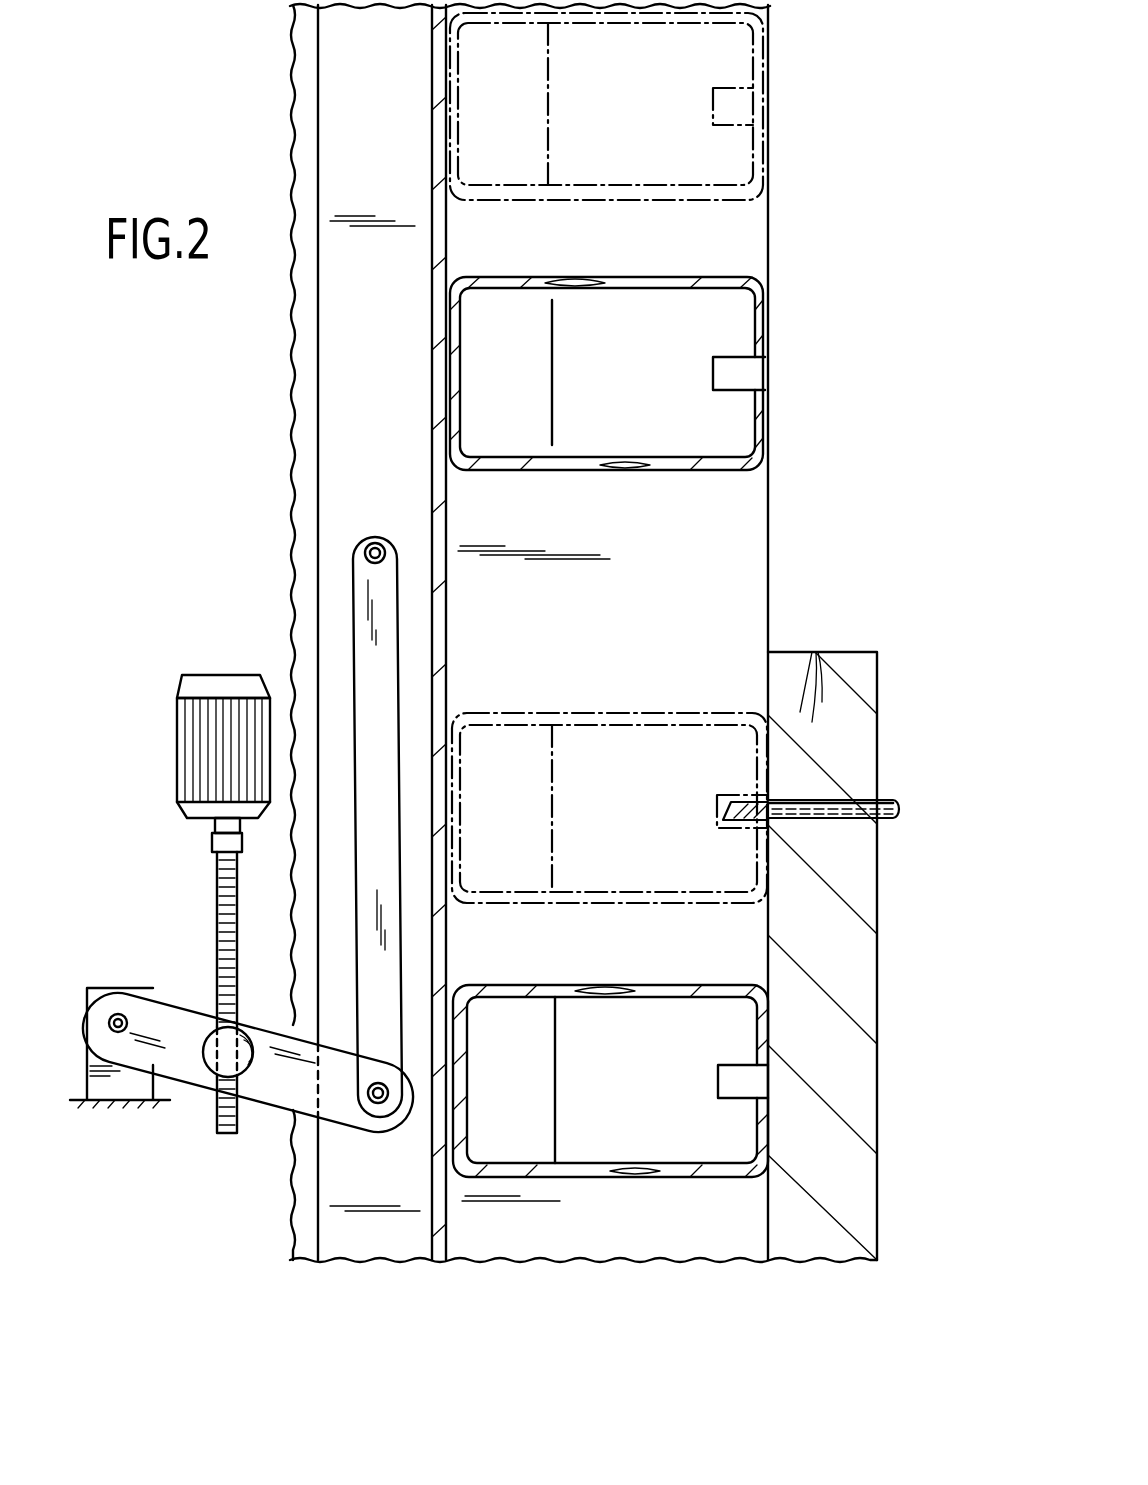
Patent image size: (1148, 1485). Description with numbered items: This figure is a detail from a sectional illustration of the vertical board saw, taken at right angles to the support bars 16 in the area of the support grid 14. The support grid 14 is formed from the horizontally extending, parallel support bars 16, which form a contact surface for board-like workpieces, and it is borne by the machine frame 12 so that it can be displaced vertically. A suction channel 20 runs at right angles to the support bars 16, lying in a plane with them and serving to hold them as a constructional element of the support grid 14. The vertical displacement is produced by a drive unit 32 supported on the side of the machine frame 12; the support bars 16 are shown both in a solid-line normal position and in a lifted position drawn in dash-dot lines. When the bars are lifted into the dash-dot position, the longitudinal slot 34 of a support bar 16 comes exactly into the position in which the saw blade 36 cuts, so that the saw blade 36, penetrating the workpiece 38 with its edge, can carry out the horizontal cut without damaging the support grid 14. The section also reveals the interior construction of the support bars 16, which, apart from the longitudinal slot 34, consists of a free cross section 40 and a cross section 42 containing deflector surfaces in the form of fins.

The machine frame 12 is at (100, 1102).
The support grid 14 is at (775, 213).
The support bar 16 is at (767, 323).
The suction channel 20 is at (743, 537).
The drive unit 32 is at (189, 955).
The longitudinal slot 34 is at (717, 800).
The saw blade 36 is at (830, 820).
The workpiece 38 is at (840, 668).
The free cross section 40 is at (496, 1055).
The cross section containing deflector surfaces 42 is at (606, 1055).